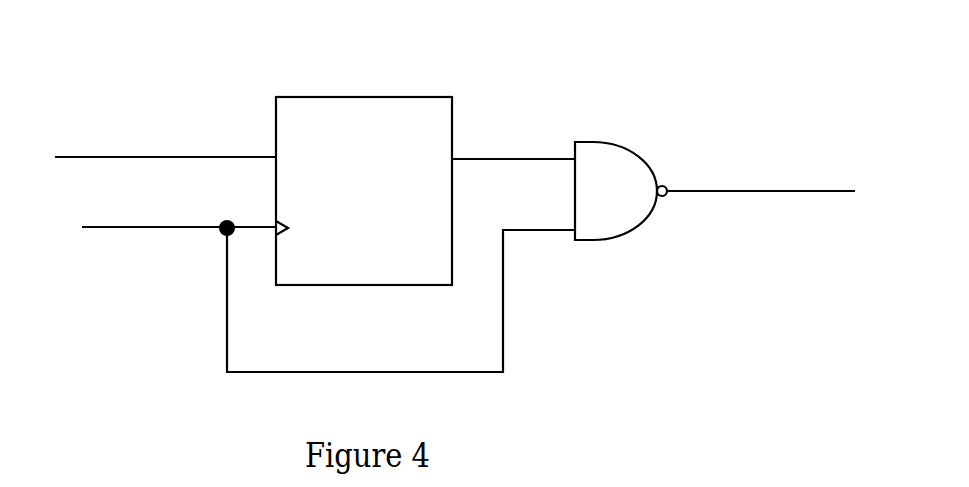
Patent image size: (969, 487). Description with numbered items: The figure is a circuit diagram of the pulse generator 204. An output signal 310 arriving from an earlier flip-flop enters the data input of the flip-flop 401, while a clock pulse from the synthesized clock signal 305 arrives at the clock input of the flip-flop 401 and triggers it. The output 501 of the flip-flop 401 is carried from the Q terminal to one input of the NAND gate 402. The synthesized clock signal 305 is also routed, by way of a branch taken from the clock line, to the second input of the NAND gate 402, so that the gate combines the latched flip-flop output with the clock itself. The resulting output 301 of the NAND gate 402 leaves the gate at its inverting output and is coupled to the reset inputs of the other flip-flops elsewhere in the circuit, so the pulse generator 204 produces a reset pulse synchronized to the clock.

The pulse generator 204 is at (642, 31).
The output of NAND gate 301 is at (727, 188).
The synthesized clock signal 305 is at (95, 224).
The output signal 310 is at (92, 155).
The flip-flop 401 is at (359, 96).
The NAND gate 402 is at (631, 148).
The output of flip-flop 501 is at (496, 156).